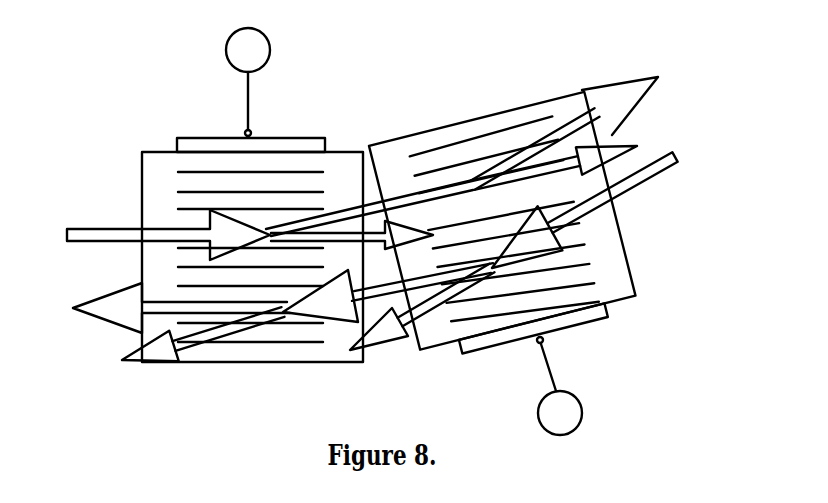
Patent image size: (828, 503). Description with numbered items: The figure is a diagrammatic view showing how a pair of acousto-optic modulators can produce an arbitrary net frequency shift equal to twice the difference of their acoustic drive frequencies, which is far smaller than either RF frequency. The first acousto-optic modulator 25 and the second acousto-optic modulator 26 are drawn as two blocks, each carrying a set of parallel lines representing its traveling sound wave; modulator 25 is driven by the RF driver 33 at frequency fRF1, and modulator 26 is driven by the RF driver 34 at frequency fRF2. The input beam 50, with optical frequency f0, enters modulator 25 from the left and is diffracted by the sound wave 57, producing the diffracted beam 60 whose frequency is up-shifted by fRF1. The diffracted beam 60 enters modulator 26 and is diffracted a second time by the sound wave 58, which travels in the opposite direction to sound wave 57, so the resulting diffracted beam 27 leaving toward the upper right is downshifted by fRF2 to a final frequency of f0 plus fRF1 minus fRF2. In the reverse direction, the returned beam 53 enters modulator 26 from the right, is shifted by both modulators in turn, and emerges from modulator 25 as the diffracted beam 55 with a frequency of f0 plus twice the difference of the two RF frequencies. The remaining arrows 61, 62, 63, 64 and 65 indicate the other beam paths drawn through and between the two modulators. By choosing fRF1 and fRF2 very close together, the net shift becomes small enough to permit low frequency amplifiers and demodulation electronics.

The acousto-optic modulator 25 is at (233, 231).
The acousto-optic modulator 26 is at (525, 234).
The diffracted beam 27 is at (565, 120).
The RF driver 33 is at (263, 82).
The RF driver 34 is at (566, 386).
The input beam 50 is at (168, 228).
The returned beam 53 is at (585, 210).
The diffracted beam 55 is at (177, 303).
The sound wave 57 is at (308, 178).
The sound wave 58 is at (500, 128).
The diffracted beam 60 is at (470, 183).
The undiffracted beam from AOM1 61 is at (352, 247).
The undiffracted beam from AOM2 62 is at (569, 160).
The diffracted beam from AOM2 63 is at (422, 319).
The beam entering AOM1 from AOM2 64 is at (388, 292).
The diffracted output beam from AOM1 65 is at (203, 348).